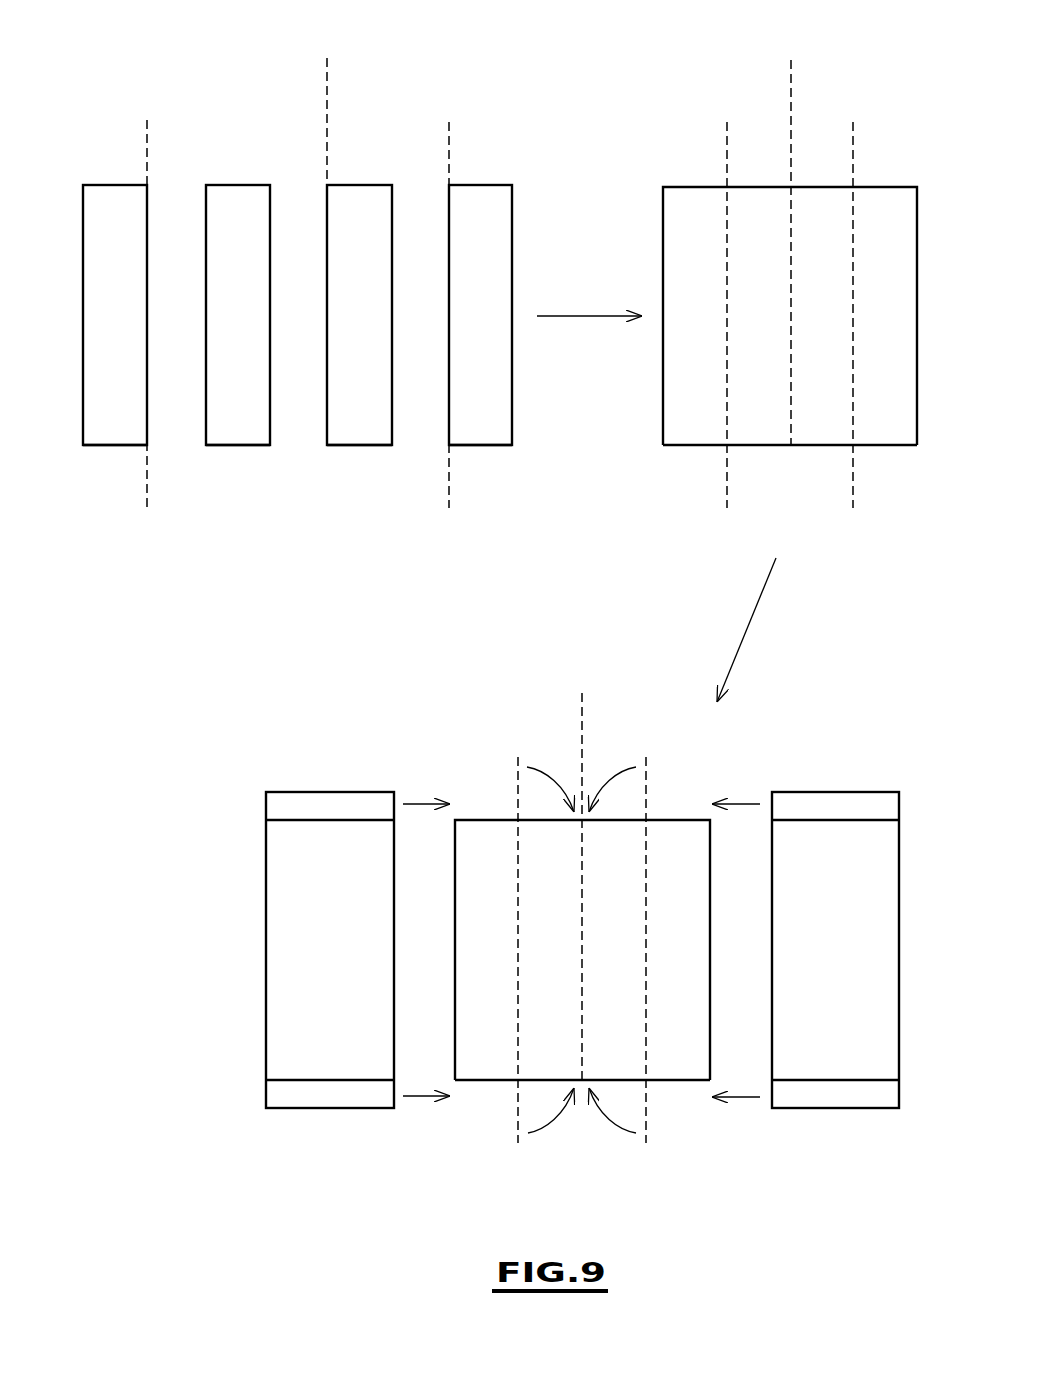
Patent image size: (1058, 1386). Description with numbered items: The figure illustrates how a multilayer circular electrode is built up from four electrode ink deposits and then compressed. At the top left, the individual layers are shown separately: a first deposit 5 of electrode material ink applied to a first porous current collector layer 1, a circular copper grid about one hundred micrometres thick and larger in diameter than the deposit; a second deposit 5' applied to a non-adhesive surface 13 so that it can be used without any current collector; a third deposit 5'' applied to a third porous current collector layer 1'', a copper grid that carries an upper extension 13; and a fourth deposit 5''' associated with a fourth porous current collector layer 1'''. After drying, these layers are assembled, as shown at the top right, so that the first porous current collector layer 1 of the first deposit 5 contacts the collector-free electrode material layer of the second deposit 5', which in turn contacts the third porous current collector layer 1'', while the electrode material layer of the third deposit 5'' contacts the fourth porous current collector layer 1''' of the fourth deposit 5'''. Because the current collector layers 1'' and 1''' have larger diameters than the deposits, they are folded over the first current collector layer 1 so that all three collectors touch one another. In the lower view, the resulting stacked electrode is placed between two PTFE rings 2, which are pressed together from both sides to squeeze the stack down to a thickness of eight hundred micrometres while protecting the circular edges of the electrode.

The first porous current collector layer 1 is at (389, 509).
The third porous current collector layer 1'' is at (526, 483).
The fourth porous current collector layer 1''' is at (697, 513).
The PTFE ring 2 is at (318, 1110).
The first deposit 5 is at (404, 779).
The second deposit 5' is at (498, 786).
The third deposit 5'' is at (590, 781).
The fourth deposit 5''' is at (687, 778).
The upper extension 13 is at (327, 120).